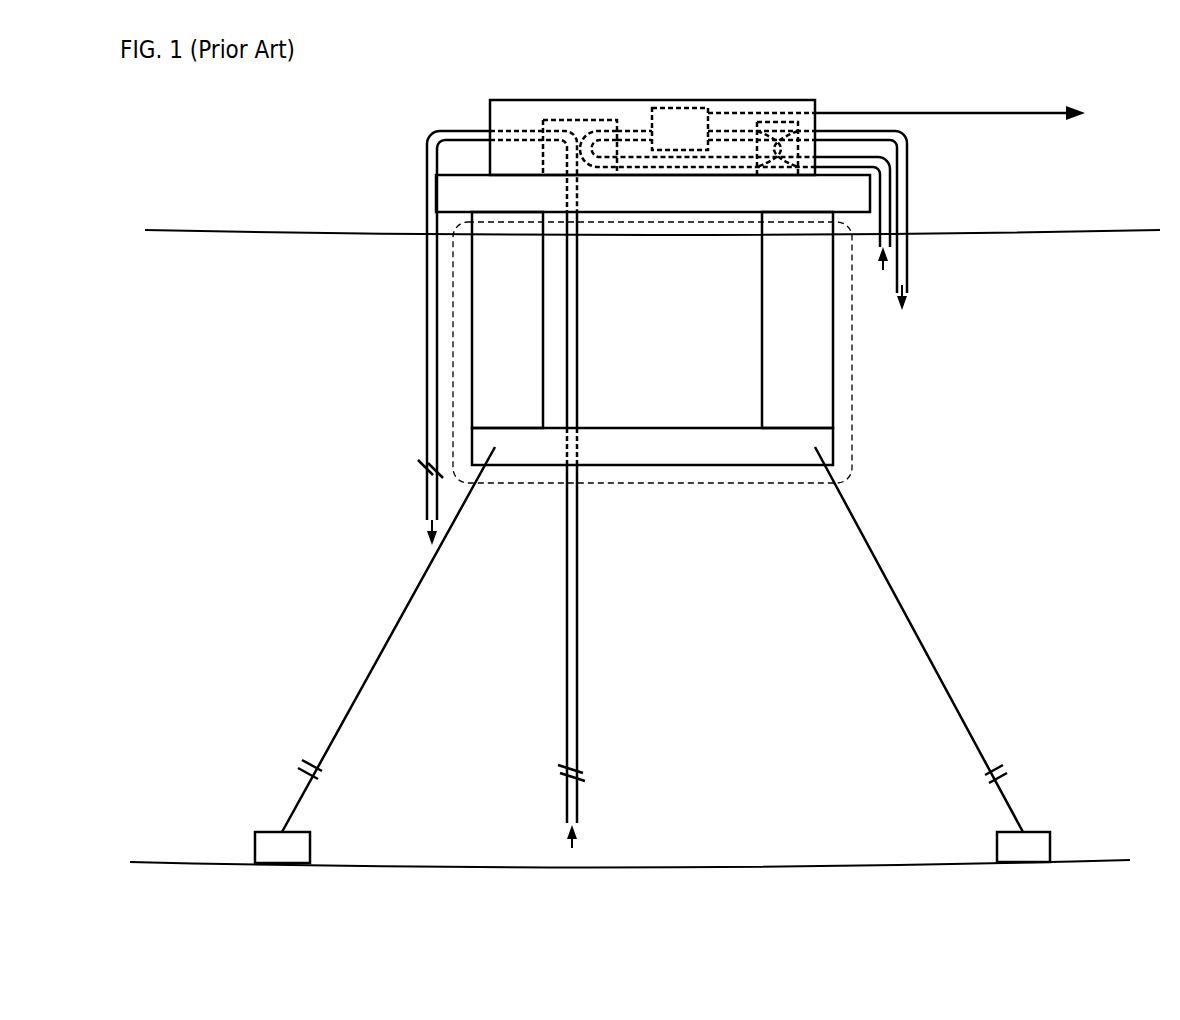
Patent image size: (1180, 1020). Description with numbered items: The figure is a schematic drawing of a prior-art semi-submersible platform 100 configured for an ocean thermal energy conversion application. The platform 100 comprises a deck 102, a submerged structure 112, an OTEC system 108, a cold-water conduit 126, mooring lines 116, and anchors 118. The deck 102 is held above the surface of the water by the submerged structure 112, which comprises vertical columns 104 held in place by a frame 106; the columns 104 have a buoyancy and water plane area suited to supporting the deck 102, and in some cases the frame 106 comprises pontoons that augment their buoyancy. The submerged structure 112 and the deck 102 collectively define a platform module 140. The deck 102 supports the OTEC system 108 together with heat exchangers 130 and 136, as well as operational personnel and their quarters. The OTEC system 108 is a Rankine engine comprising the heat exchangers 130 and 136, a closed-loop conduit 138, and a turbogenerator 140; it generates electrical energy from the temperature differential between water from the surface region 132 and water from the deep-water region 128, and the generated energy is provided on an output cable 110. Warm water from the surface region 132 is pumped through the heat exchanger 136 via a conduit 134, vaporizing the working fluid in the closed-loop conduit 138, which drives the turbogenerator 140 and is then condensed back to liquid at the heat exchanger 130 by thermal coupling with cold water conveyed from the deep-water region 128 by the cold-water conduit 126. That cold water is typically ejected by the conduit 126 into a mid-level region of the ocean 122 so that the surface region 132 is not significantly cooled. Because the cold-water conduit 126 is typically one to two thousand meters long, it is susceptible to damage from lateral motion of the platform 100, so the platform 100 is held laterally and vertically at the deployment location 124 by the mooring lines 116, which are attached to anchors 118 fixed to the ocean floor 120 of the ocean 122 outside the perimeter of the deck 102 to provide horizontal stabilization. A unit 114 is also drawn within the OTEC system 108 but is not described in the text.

The platform 100 is at (338, 122).
The deck 102 is at (838, 206).
The columns 104 is at (516, 277).
The frame 106 is at (688, 429).
The OTEC system 108 is at (740, 100).
The output cable 110 is at (1013, 113).
The submerged structure 112 is at (852, 452).
The processing unit 114 is at (696, 142).
The mooring lines 116 is at (360, 682).
The anchors 118 is at (282, 832).
The ocean floor 120 is at (582, 909).
The ocean 122 is at (282, 276).
The deployment location 124 is at (903, 747).
The cold-water conduit 126 is at (577, 303).
The deep-water region 128 is at (547, 847).
The heat exchanger 130 is at (563, 120).
The surface region 132 is at (1150, 277).
The conduit 134 is at (907, 193).
The heat exchanger 136 is at (770, 122).
The closed-loop conduit 138 is at (635, 131).
The platform module 140 is at (915, 351).